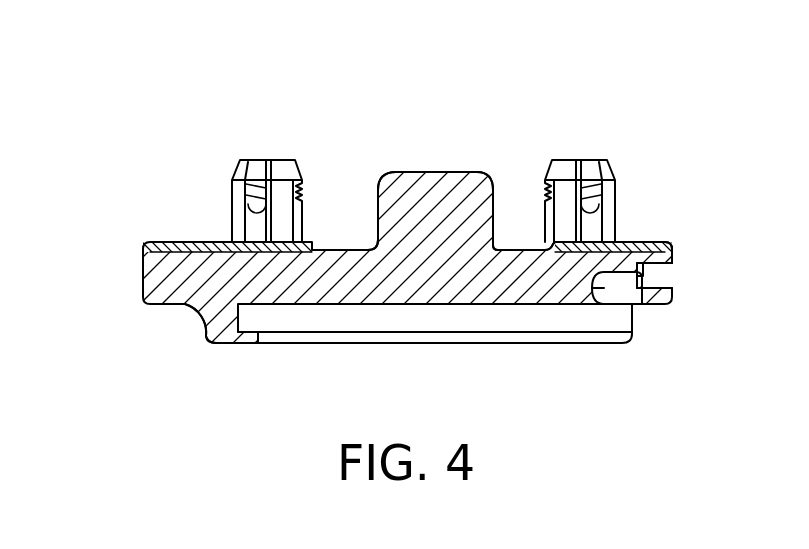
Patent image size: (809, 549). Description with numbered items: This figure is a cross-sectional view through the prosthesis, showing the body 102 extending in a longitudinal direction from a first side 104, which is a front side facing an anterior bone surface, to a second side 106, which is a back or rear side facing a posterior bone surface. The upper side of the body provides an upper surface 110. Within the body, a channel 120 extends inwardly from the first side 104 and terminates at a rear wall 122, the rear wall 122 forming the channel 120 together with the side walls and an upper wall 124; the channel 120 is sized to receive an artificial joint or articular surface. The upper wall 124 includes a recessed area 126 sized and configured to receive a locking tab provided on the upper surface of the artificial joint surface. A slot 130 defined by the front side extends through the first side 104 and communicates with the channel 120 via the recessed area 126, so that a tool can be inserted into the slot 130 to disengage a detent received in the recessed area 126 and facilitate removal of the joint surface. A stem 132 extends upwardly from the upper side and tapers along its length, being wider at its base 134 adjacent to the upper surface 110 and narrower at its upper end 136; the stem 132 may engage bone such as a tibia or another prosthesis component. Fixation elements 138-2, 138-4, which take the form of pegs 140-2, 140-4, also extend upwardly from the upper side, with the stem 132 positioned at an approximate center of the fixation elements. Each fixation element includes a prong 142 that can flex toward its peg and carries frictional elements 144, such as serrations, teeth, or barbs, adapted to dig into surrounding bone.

The body 102 is at (200, 312).
The first side 104 is at (674, 258).
The second side 106 is at (143, 270).
The upper surface 110 is at (525, 248).
The channel 120 is at (497, 342).
The rear wall 122 is at (241, 311).
The upper wall 124 is at (421, 305).
The recessed area 126 is at (598, 326).
The slot 130 is at (664, 276).
The stem 132 is at (400, 185).
The base 134 is at (374, 247).
The upper end 136 is at (441, 180).
The fixation element 138-2 is at (623, 158).
The fixation element 138-4 is at (230, 159).
The peg 140-2 is at (567, 165).
The peg 140-4 is at (282, 170).
The prong 142 is at (256, 226).
The frictional element 144 is at (256, 193).